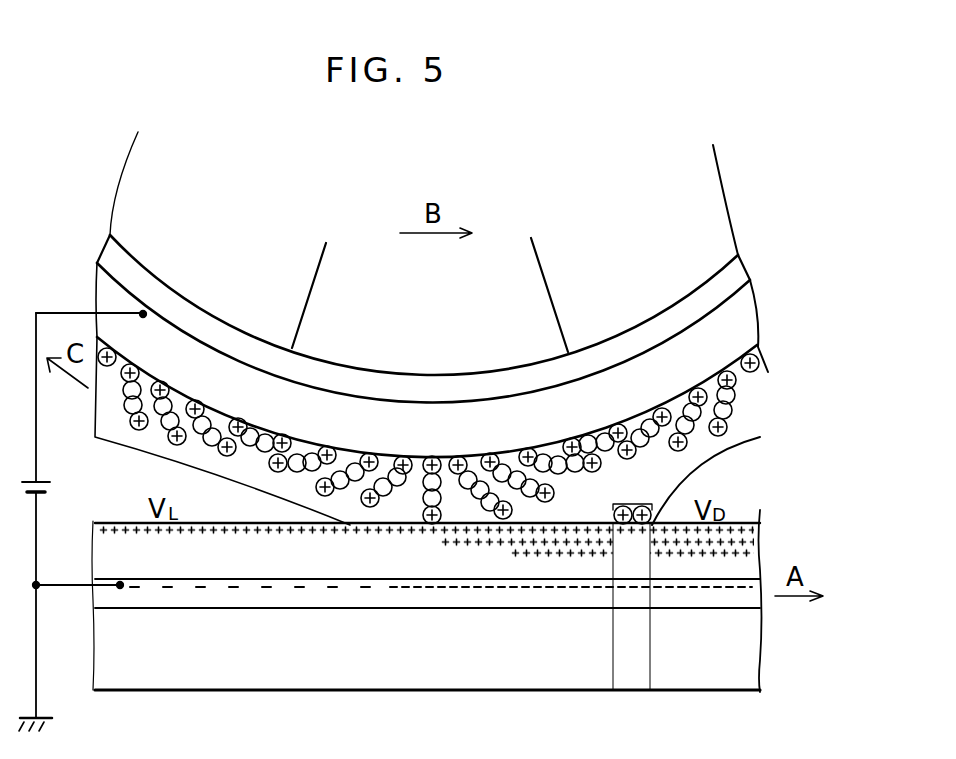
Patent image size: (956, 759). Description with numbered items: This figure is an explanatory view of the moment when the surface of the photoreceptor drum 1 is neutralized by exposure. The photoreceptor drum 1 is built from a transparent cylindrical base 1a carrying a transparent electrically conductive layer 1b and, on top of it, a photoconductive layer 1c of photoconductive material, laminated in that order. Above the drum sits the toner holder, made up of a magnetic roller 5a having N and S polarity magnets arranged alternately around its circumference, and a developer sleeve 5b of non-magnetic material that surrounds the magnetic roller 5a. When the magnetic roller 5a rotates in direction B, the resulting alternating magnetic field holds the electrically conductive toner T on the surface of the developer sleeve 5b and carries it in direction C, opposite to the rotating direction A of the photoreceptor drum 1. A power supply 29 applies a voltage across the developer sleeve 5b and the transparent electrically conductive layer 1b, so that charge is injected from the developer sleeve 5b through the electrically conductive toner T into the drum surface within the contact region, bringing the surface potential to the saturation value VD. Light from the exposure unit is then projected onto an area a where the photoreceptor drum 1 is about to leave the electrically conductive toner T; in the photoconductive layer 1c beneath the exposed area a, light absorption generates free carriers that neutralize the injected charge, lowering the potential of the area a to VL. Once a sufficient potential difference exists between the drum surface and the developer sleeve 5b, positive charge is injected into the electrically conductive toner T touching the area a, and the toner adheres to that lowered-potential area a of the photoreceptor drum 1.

The magnetic roller 5a is at (507, 260).
The developer sleeve 5b is at (722, 327).
The electrically conductive toner T is at (630, 497).
The power supply 29 is at (50, 482).
The photoreceptor drum 1 is at (433, 609).
The transparent cylindrical base 1a is at (740, 668).
The transparent electrically conductive layer 1b is at (740, 597).
The photoconductive layer 1c is at (737, 568).
The exposed area a is at (652, 694).